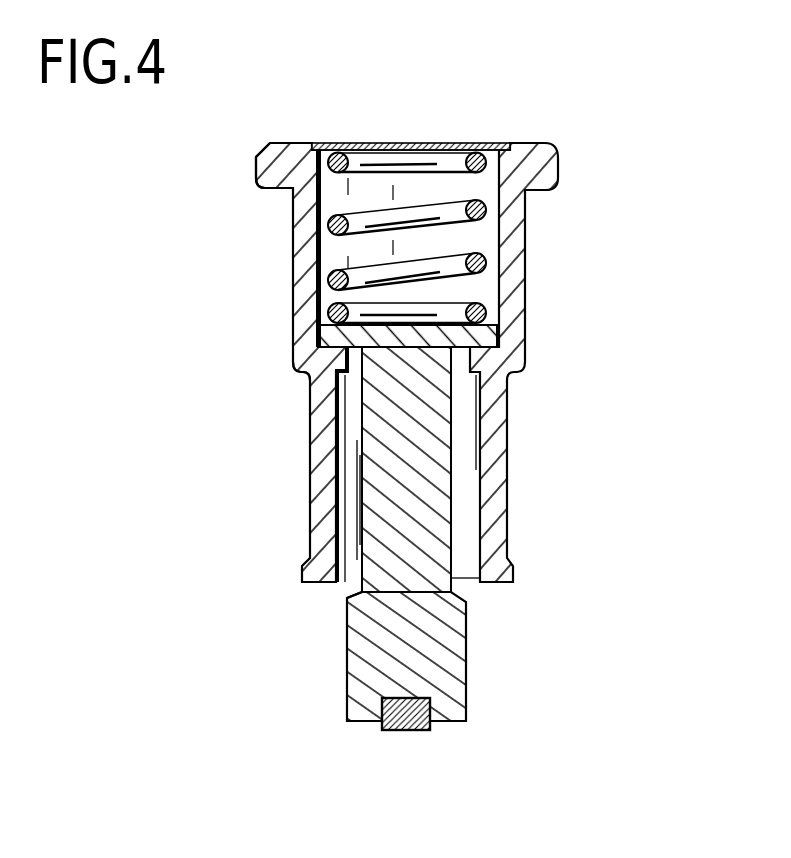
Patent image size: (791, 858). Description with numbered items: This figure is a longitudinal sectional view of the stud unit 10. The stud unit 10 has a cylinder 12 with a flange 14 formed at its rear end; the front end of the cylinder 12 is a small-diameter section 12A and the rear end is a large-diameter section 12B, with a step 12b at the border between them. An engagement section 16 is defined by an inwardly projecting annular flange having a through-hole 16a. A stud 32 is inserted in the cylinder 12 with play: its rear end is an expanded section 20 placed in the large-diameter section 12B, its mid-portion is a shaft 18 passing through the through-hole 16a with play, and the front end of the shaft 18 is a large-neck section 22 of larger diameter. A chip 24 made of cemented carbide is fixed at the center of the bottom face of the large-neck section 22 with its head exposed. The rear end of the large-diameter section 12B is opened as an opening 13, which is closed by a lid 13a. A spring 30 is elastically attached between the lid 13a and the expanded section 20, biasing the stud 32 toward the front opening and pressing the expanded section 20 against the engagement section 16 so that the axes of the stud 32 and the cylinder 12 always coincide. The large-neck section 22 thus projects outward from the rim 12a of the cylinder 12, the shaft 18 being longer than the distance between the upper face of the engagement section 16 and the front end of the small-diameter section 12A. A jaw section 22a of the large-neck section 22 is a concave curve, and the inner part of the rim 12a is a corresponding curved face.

The stud unit 10 is at (547, 131).
The cylinder 12 is at (474, 362).
The small-diameter section 12A is at (482, 464).
The large-diameter section 12B is at (527, 258).
The rim 12a is at (493, 583).
The step 12b is at (311, 378).
The opening 13 is at (505, 157).
The lid 13a is at (398, 148).
The flange 14 is at (268, 147).
The engagement section 16 is at (490, 455).
The through-hole 16a is at (337, 392).
The shaft 18 is at (377, 473).
The expanded section 20 is at (320, 336).
The large-neck section 22 is at (347, 663).
The jaw section 22a is at (358, 591).
The chip 24 is at (410, 732).
The spring 30 is at (358, 246).
The stud 32 is at (453, 500).